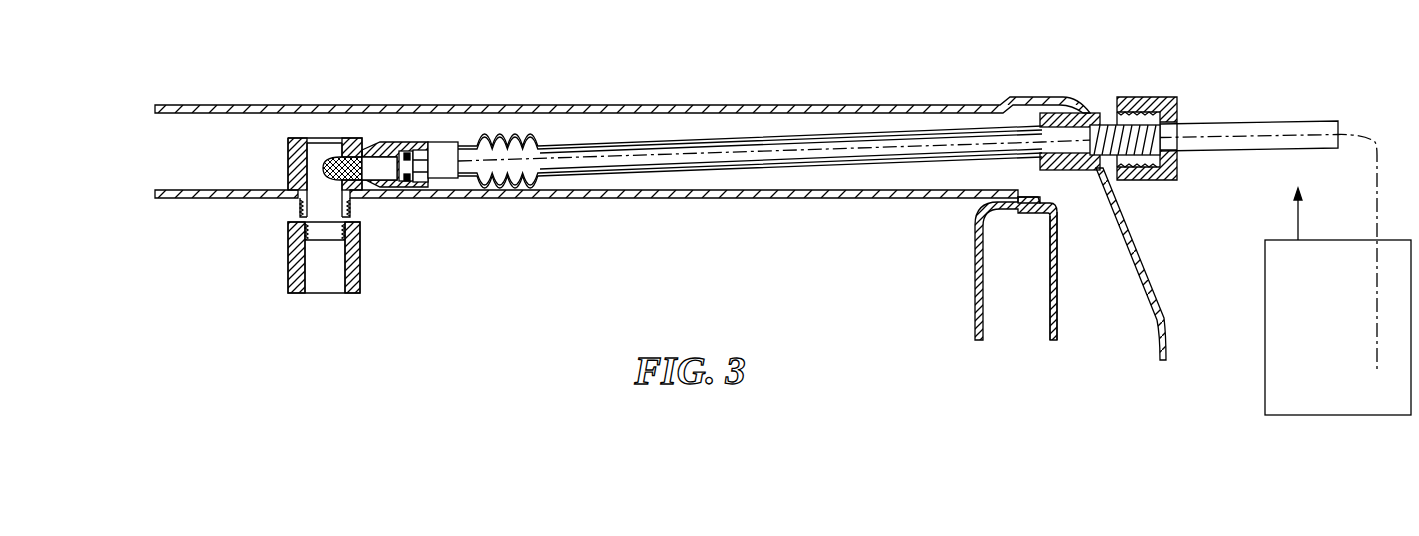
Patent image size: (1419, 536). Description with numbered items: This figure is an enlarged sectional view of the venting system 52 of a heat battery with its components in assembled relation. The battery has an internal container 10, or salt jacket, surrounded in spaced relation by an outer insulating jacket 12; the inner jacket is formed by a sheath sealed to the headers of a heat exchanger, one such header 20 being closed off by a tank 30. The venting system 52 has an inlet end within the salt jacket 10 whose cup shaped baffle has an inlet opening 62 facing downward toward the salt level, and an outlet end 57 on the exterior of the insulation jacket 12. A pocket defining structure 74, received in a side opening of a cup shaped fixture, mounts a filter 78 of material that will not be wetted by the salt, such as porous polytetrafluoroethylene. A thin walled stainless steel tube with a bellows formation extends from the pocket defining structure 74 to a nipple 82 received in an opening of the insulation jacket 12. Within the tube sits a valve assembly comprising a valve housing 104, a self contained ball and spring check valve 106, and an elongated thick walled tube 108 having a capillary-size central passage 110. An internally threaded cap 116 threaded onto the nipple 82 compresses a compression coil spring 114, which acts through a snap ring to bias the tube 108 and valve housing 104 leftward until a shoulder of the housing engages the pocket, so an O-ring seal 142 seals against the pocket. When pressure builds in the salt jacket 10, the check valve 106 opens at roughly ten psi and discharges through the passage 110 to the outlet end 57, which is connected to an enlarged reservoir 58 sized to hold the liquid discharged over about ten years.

The internal container 10 is at (185, 185).
The insulating jacket 12 is at (1137, 232).
The header 20 is at (977, 270).
The tank 30 is at (1060, 275).
The venting system 52 is at (765, 136).
The outlet end 57 is at (1293, 115).
The enlarged reservoir 58 is at (1265, 307).
The inlet opening 62 is at (333, 295).
The pocket defining structure 74 is at (387, 185).
The filter 78 is at (337, 163).
The nipple 82 is at (1095, 122).
The valve housing 104 is at (420, 173).
The check valve 106 is at (437, 152).
The elongated thick walled tube 108 is at (612, 146).
The central passage 110 is at (567, 160).
The compression coil spring 114 is at (1103, 123).
The internally threaded cap 116 is at (1177, 107).
The O-ring seal 142 is at (407, 153).